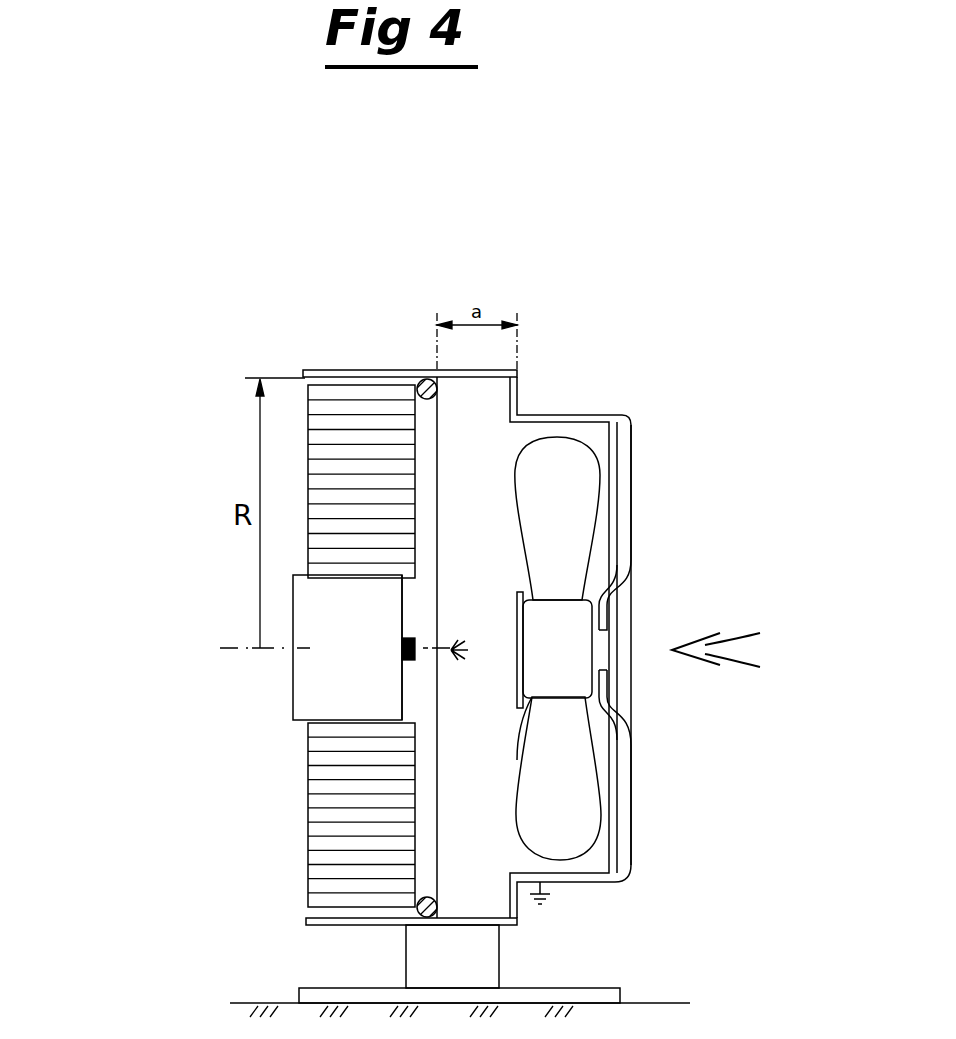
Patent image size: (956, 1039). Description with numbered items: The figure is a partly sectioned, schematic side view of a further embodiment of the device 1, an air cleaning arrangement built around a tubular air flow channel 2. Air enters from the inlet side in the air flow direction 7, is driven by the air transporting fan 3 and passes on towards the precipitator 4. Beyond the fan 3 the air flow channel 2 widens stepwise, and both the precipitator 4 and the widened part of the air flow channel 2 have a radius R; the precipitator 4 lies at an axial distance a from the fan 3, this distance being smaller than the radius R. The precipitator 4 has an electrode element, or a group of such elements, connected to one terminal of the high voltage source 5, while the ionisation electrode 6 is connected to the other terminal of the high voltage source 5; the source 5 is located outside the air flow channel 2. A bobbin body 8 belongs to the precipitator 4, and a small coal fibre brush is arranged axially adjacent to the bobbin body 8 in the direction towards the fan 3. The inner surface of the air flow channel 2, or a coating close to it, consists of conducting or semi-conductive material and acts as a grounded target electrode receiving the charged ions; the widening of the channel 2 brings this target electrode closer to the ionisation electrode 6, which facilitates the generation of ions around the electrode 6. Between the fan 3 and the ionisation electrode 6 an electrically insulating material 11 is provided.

The device 1 is at (203, 350).
The air flow channel 2 is at (342, 372).
The fan 3 is at (557, 465).
The precipitator 4 is at (327, 875).
The high voltage source 5 is at (472, 962).
The ionisation electrode 6 is at (455, 655).
The air flow direction 7 is at (740, 627).
The bobbin body 8 is at (317, 683).
The electrically insulating material 11 is at (517, 730).